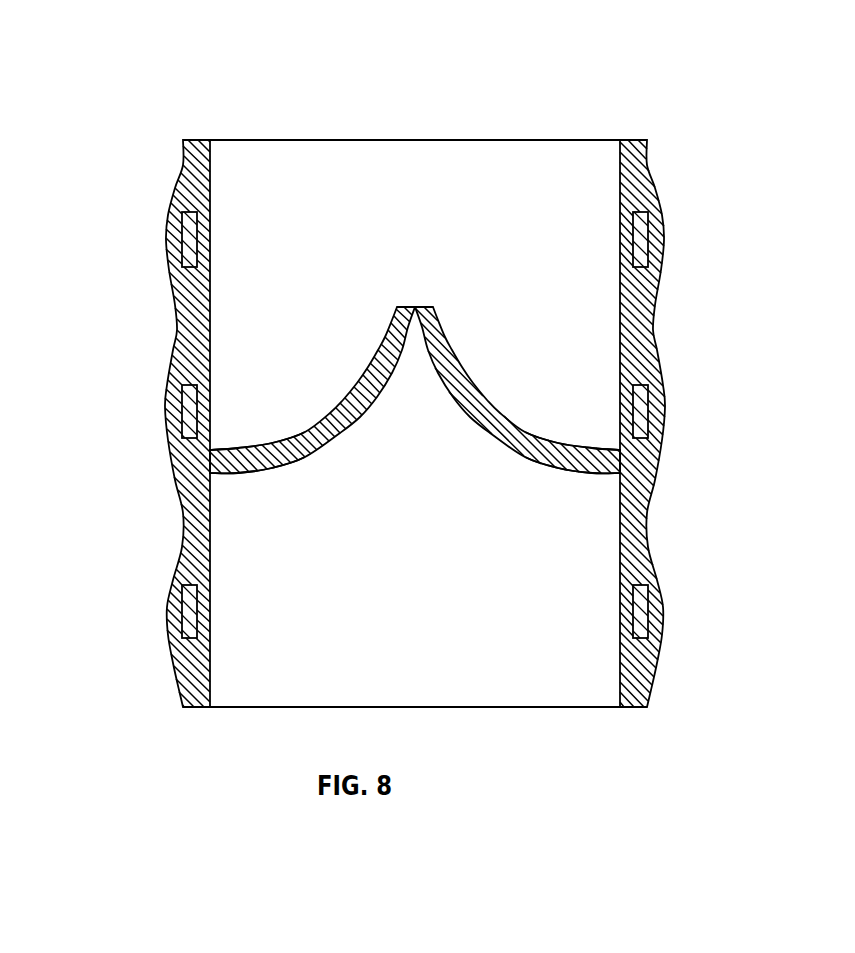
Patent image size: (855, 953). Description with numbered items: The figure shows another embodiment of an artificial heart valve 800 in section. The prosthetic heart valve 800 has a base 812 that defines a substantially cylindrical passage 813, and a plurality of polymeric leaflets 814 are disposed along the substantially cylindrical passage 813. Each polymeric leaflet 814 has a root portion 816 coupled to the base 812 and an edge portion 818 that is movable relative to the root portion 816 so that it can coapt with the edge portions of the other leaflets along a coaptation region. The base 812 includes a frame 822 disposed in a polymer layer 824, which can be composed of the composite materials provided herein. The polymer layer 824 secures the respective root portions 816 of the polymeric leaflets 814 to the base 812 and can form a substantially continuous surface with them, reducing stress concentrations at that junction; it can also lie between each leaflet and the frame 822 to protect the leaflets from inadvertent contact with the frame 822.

The prosthetic heart valve 800 is at (124, 44).
The base 812 is at (658, 337).
The substantially cylindrical passage 813 is at (410, 171).
The polymeric leaflet 814 is at (371, 355).
The root portion 816 is at (255, 445).
The edge portion 818 is at (397, 305).
The frame 822 is at (647, 220).
The polymer layer 824 is at (640, 532).